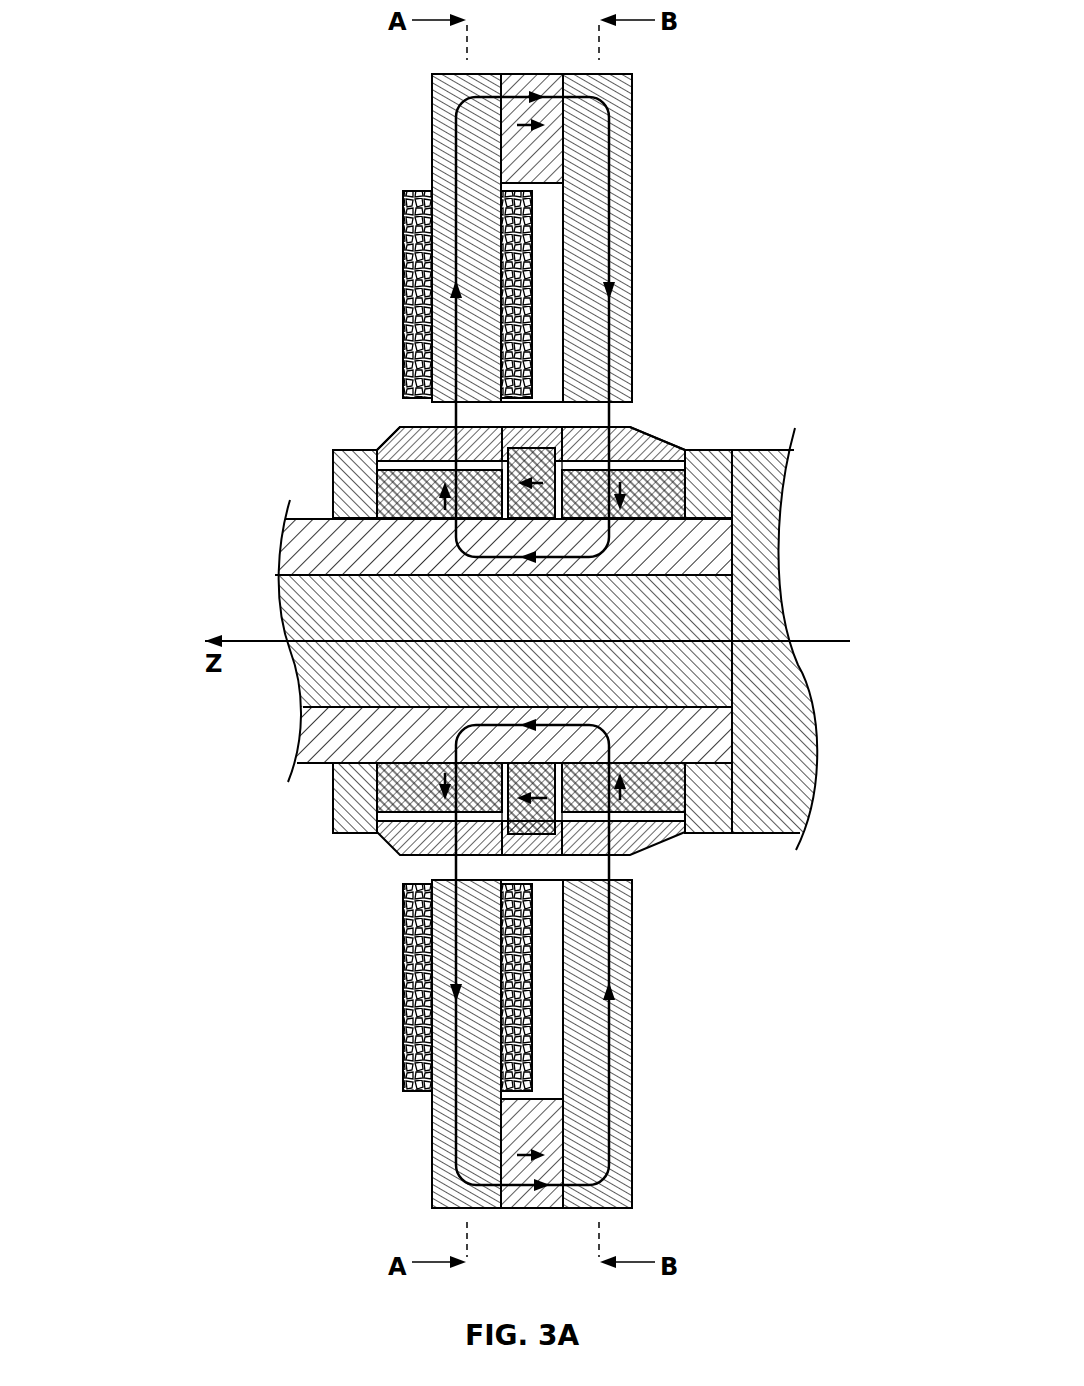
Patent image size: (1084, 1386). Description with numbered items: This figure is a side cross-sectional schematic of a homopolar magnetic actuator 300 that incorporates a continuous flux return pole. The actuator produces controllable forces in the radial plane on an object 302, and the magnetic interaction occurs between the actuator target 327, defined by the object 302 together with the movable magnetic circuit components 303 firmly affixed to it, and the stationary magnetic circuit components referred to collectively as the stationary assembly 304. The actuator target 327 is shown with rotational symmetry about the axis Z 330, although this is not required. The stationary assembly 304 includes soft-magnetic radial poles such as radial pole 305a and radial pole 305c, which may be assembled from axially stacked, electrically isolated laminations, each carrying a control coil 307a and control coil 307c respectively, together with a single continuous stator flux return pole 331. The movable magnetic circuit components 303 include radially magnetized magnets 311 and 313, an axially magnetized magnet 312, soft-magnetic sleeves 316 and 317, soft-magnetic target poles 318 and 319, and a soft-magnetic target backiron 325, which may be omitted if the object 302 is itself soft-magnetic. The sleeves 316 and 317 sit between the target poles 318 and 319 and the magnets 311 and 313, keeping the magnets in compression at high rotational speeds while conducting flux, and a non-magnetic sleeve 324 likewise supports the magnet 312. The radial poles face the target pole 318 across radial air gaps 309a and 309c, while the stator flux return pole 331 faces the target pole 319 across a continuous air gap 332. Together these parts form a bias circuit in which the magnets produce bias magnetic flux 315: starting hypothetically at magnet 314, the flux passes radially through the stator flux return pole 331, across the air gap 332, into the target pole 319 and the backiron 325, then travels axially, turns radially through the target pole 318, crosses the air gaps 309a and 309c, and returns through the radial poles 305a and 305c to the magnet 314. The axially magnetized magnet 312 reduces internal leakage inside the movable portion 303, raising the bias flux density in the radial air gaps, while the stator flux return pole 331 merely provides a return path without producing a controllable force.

The magnetic actuator 300 is at (255, 62).
The object 302 is at (794, 754).
The movable magnetic circuit components 303 is at (225, 472).
The stationary assembly 304 is at (255, 187).
The radial pole 305a is at (467, 190).
The radial pole 305c is at (468, 1105).
The control coil 307a is at (413, 245).
The control coil 307c is at (418, 1012).
The radial air gap 309a is at (437, 417).
The radial air gap 309c is at (467, 865).
The radially magnetized magnet 311 is at (413, 503).
The axially magnetized magnet 312 is at (537, 510).
The radially magnetized magnet 313 is at (652, 506).
The magnet 314 is at (533, 85).
The bias magnetic flux 315 is at (612, 226).
The soft-magnetic sleeve 316 is at (400, 470).
The soft-magnetic sleeve 317 is at (643, 472).
The target pole 318 is at (420, 445).
The target pole 319 is at (658, 449).
The sleeve 324 is at (540, 445).
The soft-magnetic target backiron 325 is at (323, 740).
The actuator target 327 is at (210, 555).
The axis Z 330 is at (252, 640).
The continuous stator flux return pole 331 is at (625, 158).
The continuous air gap 332 is at (638, 407).